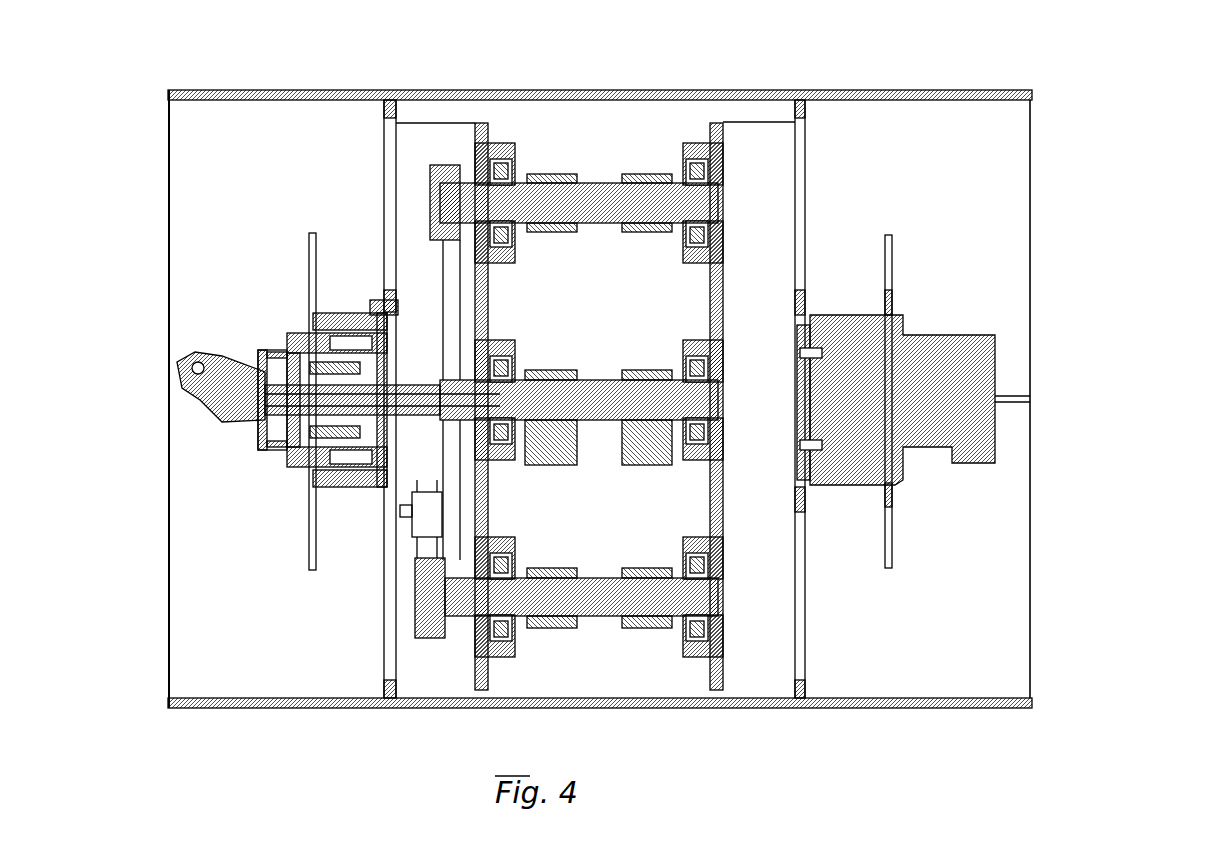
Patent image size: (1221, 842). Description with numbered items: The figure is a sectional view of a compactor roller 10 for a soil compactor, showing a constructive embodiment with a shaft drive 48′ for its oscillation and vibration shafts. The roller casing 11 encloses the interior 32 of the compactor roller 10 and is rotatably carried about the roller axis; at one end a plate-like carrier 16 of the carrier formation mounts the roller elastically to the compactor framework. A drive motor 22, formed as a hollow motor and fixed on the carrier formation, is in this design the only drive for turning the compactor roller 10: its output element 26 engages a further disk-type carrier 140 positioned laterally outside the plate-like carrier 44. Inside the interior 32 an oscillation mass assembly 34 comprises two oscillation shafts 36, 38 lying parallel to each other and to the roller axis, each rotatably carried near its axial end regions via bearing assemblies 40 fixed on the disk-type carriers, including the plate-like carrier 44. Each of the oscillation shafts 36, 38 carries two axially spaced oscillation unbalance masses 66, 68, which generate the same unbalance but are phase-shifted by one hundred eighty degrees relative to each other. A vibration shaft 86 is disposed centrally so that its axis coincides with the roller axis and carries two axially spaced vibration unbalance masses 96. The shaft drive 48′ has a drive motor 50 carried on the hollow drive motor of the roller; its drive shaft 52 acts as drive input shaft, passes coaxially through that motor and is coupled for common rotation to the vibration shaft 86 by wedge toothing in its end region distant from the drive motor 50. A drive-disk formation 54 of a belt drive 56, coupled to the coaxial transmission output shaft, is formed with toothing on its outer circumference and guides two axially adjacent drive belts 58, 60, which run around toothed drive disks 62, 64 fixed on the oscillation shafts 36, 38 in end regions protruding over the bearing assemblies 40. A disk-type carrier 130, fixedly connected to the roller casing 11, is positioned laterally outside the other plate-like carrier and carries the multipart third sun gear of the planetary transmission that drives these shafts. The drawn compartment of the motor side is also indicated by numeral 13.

The compactor roller 10 is at (1106, 60).
The roller casing 11 is at (890, 90).
The motor compartment 13 is at (922, 263).
The plate-like carrier 16 is at (310, 567).
The drive motor 22 is at (997, 362).
The output element 26 is at (882, 550).
The interior 32 is at (952, 130).
The oscillation mass assembly 34 is at (768, 217).
The oscillation shaft 36 is at (603, 178).
The oscillation shaft 38 is at (603, 620).
The bearing assembly 40 is at (743, 163).
The plate-like carrier 44 is at (722, 106).
The shaft drive 48′ is at (263, 520).
The drive motor 50 is at (200, 423).
The drive shaft 52 is at (333, 398).
The drive-disk formation 54 is at (427, 367).
The belt drive 56 is at (437, 260).
The drive belt 58 is at (420, 277).
The drive belt 60 is at (413, 548).
The drive disk 62 is at (440, 165).
The drive disk 64 is at (447, 643).
The oscillation unbalance mass 66 is at (548, 172).
The oscillation unbalance mass 68 is at (555, 633).
The vibration shaft 86 is at (597, 377).
The vibration unbalance mass 96 is at (643, 373).
The disk-type carrier 130 is at (398, 688).
The disk-type carrier 140 is at (806, 690).